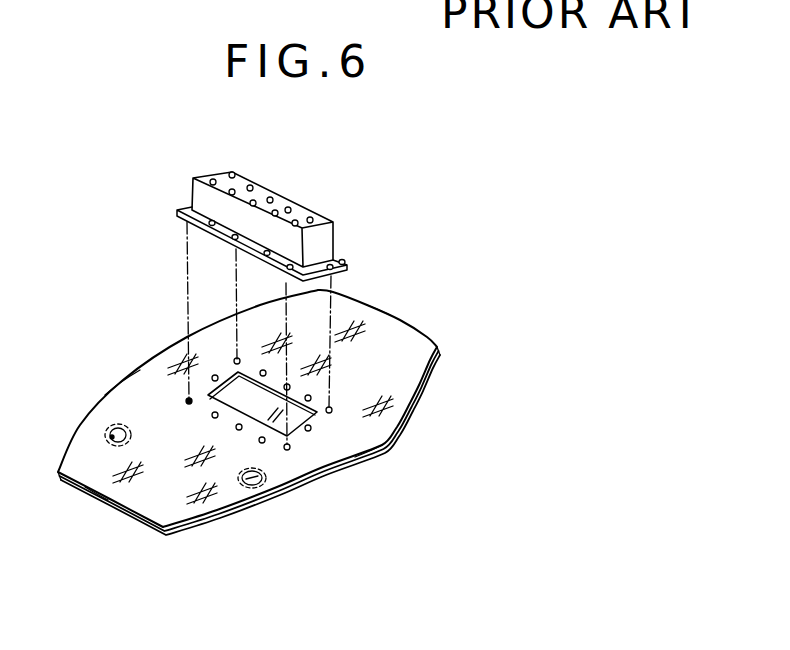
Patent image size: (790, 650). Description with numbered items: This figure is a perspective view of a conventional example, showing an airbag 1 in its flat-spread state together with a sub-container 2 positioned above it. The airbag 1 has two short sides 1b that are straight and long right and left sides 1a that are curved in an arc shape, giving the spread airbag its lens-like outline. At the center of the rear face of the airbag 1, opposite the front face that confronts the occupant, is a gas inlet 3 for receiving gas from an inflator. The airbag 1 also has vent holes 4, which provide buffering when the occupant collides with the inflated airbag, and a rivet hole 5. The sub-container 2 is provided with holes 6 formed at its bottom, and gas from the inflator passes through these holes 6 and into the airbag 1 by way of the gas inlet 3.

The airbag 1 is at (320, 483).
The long right and left sides 1a is at (140, 370).
The short sides 1b is at (388, 304).
The sub-container 2 is at (322, 213).
The gas inlet 3 is at (238, 404).
The vent holes 4 is at (113, 436).
The rivet hole 5 is at (331, 408).
The holes 6 is at (271, 188).